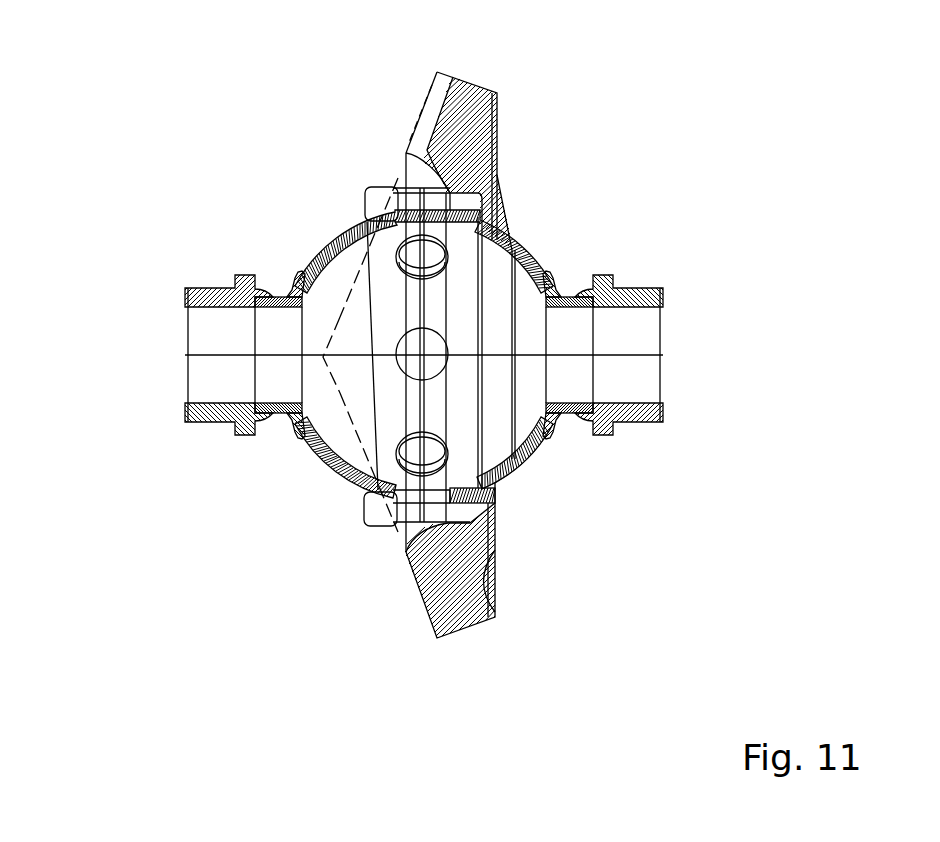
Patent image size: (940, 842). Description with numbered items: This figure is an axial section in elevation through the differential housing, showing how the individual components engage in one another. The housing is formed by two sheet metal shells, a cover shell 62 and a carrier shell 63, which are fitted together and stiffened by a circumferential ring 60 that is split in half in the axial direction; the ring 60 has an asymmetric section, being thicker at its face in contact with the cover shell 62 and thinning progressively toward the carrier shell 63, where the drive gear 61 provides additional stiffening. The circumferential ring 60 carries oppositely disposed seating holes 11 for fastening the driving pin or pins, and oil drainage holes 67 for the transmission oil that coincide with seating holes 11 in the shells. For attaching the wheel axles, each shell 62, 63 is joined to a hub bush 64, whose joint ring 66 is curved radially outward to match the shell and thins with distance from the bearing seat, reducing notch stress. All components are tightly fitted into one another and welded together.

The seating hole 11 is at (410, 330).
The circumferential ring 60 is at (375, 198).
The drive gear 61 is at (470, 99).
The cover shell 62 is at (331, 463).
The carrier shell 63 is at (528, 450).
The hub bush 64 is at (215, 296).
The joint ring 66 is at (279, 411).
The oil drainage hole 67 is at (432, 258).